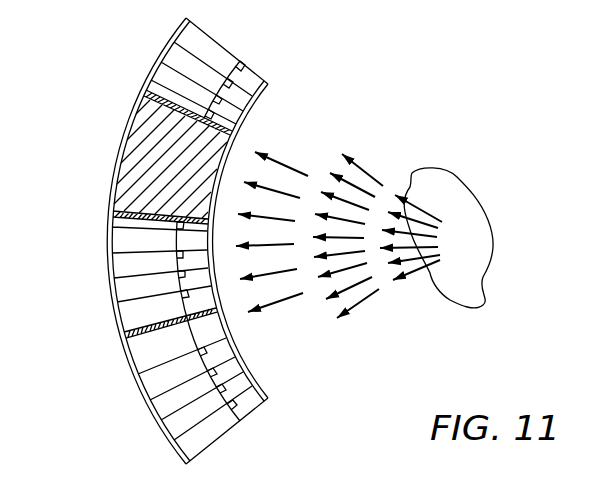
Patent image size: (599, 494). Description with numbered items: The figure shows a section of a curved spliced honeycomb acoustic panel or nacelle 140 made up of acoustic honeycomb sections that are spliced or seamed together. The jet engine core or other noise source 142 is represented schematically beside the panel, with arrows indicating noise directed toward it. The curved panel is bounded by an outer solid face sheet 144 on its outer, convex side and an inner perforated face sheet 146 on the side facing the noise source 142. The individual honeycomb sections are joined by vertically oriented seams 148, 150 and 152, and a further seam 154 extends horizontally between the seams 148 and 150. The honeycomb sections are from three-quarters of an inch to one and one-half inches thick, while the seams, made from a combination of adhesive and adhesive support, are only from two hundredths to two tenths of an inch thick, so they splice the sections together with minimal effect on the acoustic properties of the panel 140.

The curved spliced honeycomb acoustic panel 140 is at (213, 443).
The noise source 142 is at (463, 193).
The outer solid face sheet 144 is at (106, 238).
The inner perforated face sheet 146 is at (230, 104).
The vertically oriented seam 148 is at (161, 97).
The vertically oriented seam 150 is at (133, 214).
The vertically oriented seam 152 is at (150, 344).
The seam 154 is at (143, 160).